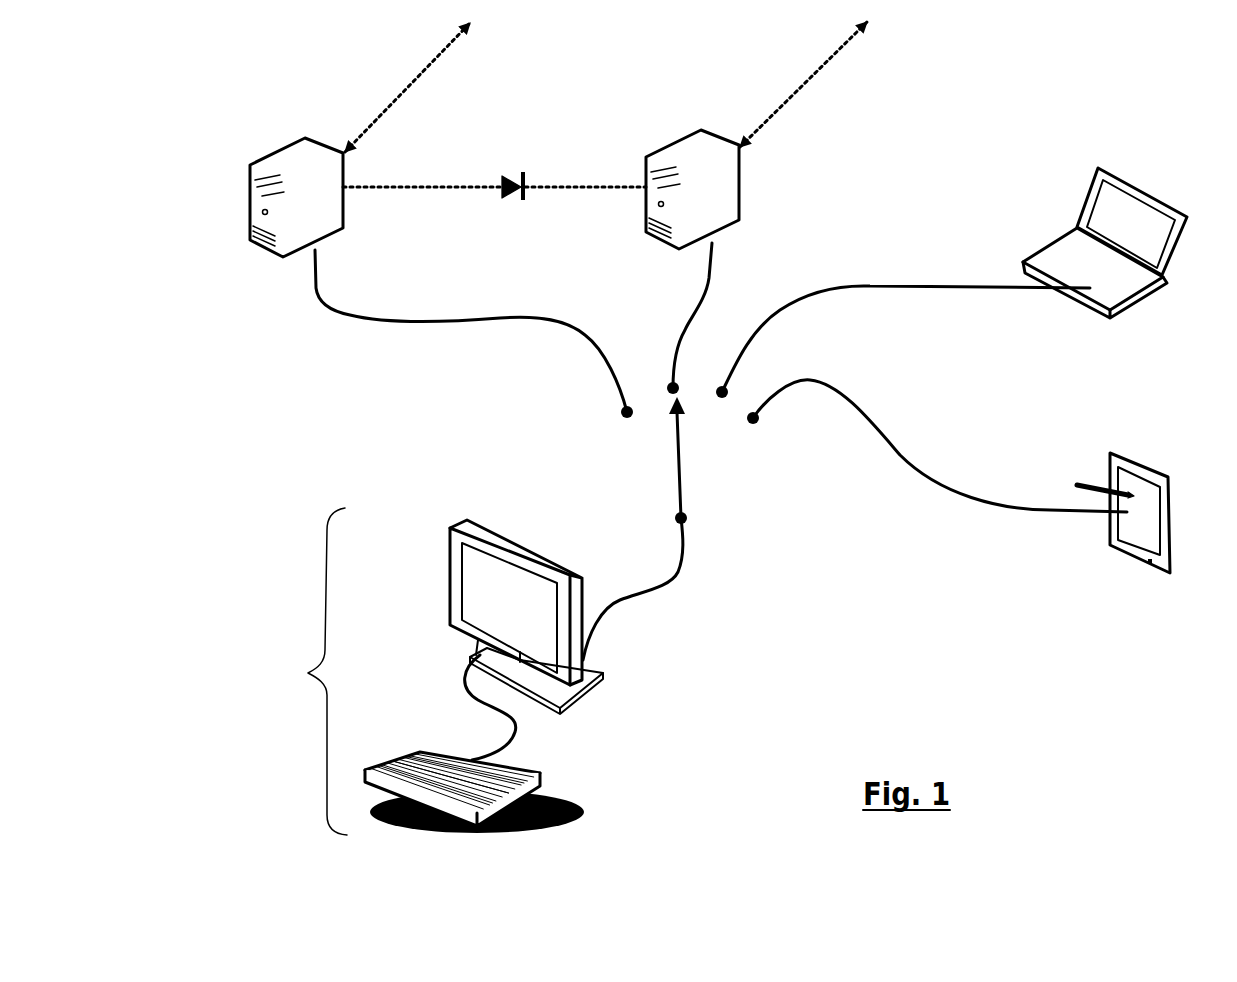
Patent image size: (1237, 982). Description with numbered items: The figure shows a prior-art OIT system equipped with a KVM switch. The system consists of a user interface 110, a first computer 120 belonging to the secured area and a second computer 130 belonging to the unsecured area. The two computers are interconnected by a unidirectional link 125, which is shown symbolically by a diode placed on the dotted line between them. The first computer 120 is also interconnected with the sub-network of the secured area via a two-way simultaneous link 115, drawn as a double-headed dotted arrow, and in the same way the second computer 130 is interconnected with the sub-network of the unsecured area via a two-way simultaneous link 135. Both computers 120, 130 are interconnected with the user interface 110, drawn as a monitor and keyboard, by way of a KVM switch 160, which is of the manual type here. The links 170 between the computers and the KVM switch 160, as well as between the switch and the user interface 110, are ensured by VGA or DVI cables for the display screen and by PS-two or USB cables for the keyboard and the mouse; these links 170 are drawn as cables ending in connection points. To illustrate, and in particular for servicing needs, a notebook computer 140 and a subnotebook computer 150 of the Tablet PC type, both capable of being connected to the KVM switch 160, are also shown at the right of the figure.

The user interface 110 is at (423, 671).
The two-way simultaneous link 115 is at (380, 113).
The first computer 120 is at (253, 165).
The unidirectional link 125 is at (520, 173).
The second computer 130 is at (740, 190).
The two-way simultaneous link 135 is at (773, 110).
The notebook computer 140 is at (1130, 180).
The subnotebook computer 150 is at (1138, 458).
The KVM switch 160 is at (648, 442).
The links 170 is at (865, 285).